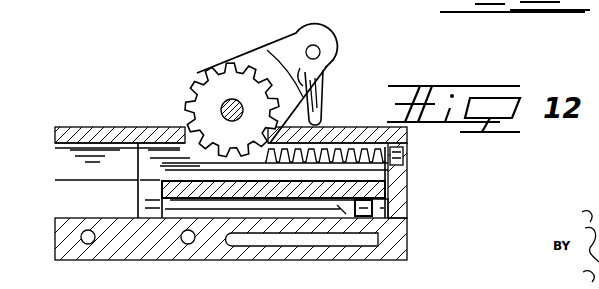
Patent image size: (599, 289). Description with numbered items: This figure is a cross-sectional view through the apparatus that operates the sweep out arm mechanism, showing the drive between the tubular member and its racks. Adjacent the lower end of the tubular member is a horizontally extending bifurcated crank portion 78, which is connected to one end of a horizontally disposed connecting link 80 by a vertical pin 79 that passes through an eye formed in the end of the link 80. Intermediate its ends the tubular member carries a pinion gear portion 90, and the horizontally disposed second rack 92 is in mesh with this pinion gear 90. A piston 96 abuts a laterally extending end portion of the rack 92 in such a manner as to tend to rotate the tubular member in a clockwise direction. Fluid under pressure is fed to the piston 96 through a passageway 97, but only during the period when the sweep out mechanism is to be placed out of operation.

The bifurcated crank portion 78 is at (278, 45).
The vertical pin 79 is at (316, 50).
The connecting link 80 is at (317, 105).
The pinion gear portion 90 is at (195, 83).
The second rack 92 is at (365, 165).
The piston 96 is at (383, 225).
The passageway 97 is at (367, 237).